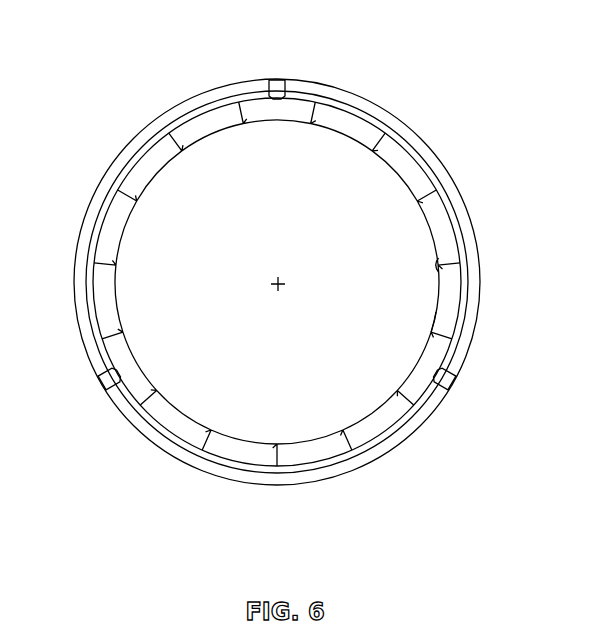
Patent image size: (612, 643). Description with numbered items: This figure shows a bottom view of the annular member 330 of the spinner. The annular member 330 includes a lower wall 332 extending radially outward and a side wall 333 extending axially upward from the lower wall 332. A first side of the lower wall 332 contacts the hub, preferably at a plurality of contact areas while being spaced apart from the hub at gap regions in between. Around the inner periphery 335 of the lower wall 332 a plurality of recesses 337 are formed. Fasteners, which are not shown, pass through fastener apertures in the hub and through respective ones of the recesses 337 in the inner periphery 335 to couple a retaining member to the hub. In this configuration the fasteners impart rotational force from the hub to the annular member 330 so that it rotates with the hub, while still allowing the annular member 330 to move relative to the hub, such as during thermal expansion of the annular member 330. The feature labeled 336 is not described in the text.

The annular member 330 is at (421, 127).
The lower wall 332 is at (437, 244).
The side wall 333 is at (476, 226).
The inner periphery 335 is at (435, 320).
The tab 336 is at (275, 80).
The recesses 337 is at (174, 140).